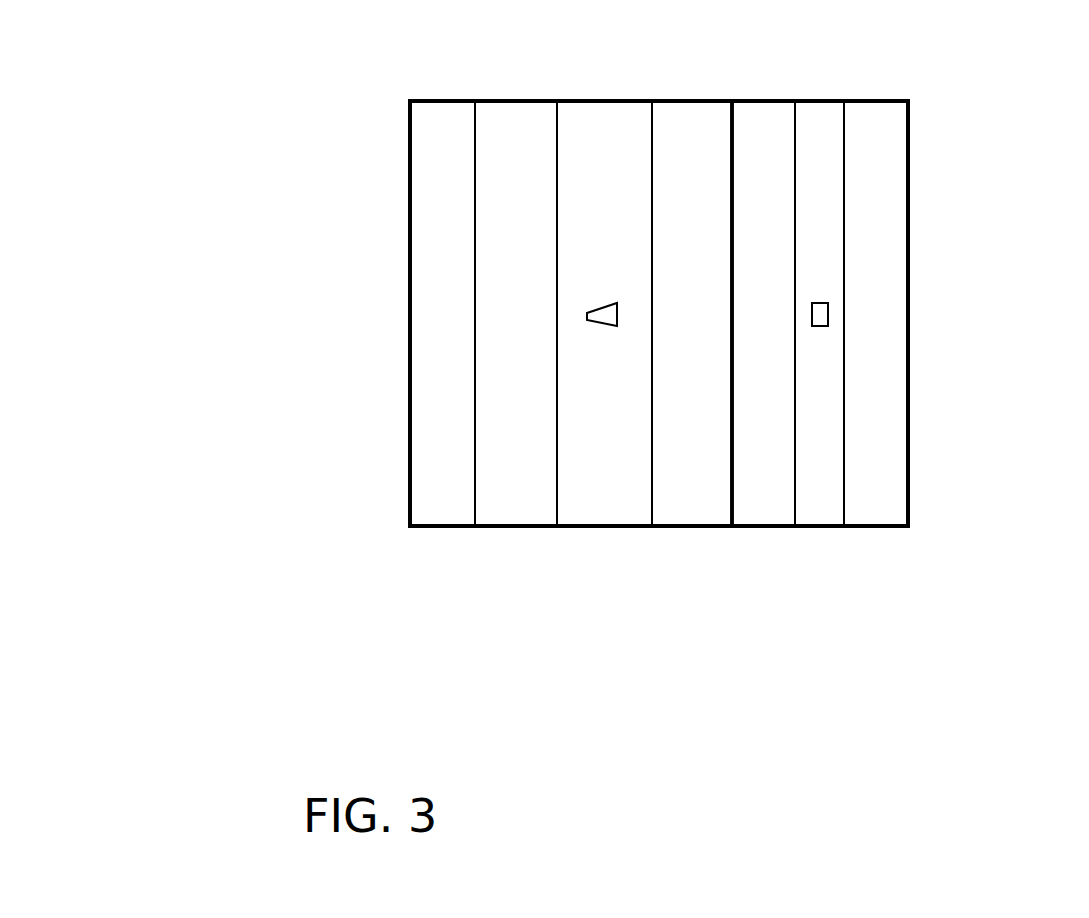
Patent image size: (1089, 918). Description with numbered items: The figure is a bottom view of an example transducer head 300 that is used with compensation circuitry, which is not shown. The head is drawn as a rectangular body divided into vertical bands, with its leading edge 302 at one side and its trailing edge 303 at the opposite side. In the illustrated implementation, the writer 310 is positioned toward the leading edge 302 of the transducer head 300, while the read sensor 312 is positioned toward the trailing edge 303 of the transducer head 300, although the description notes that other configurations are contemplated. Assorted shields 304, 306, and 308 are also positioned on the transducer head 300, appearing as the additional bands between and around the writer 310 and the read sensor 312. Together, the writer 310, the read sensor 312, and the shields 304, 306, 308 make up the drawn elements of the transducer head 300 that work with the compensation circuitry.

The transducer head 300 is at (320, 568).
The leading edge 302 is at (410, 244).
The trailing edge 303 is at (909, 278).
The shield 304 is at (513, 101).
The shield 306 is at (692, 101).
The shield 308 is at (878, 101).
The writer 310 is at (617, 326).
The read sensor 312 is at (822, 326).